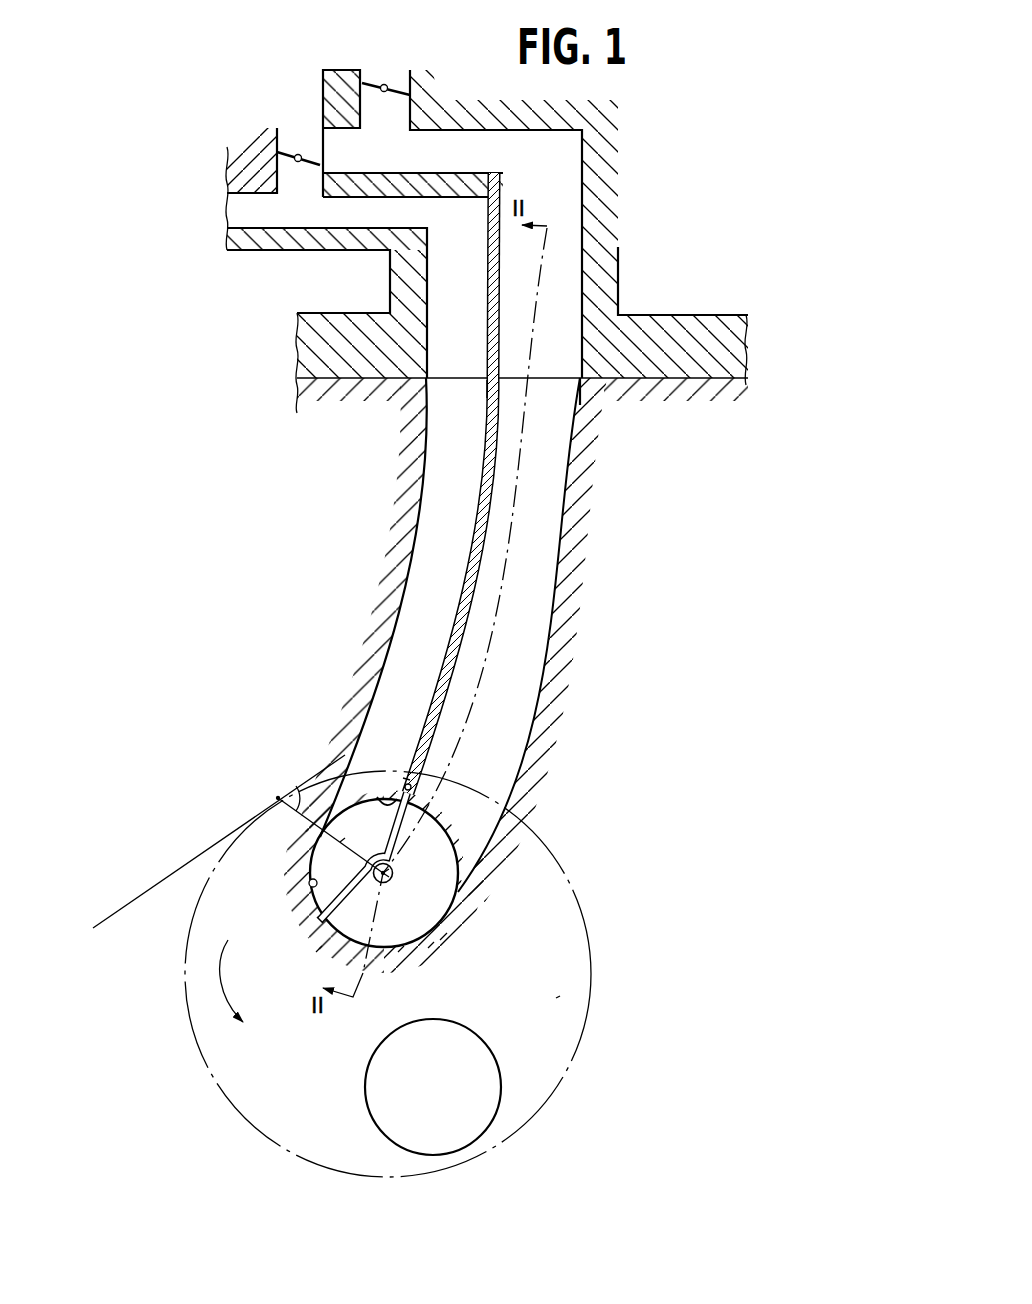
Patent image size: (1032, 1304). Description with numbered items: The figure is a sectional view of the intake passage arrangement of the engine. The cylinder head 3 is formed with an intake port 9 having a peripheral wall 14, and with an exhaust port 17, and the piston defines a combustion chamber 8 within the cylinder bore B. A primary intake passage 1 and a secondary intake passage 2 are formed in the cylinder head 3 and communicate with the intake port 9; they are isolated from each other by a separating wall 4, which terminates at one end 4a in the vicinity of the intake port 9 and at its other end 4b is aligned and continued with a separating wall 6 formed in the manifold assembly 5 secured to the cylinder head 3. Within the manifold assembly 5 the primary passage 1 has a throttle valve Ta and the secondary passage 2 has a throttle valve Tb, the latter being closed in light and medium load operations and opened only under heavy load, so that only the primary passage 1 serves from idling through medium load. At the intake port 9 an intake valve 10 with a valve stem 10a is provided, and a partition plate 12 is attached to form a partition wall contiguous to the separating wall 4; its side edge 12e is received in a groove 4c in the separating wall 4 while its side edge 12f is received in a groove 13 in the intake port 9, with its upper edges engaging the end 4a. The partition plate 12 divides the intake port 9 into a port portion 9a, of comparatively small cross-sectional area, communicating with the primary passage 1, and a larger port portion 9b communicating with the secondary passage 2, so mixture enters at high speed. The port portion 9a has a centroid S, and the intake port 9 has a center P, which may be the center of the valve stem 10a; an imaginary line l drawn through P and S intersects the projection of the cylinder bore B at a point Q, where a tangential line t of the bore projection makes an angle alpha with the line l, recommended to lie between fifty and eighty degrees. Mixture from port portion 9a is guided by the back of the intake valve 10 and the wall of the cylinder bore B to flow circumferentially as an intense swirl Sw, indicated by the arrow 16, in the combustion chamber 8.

The primary intake passage 1 is at (410, 595).
The secondary intake passage 2 is at (535, 572).
The cylinder head 3 is at (580, 405).
The separating wall 4 is at (445, 683).
The end of separating wall 4a is at (405, 777).
The other end of separating wall 4b is at (487, 398).
The groove 4c is at (412, 790).
The manifold assembly 5 is at (660, 325).
The separating wall 6 is at (487, 262).
The combustion chamber 8 is at (558, 997).
The intake port 9 is at (307, 868).
The port portion 9a is at (309, 883).
The port portion 9b is at (400, 950).
The intake valve 10 is at (430, 947).
The valve stem 10a is at (394, 874).
The partition plate 12 is at (340, 897).
The side edge 12e is at (373, 788).
The side edge 12f is at (315, 920).
The groove 13 is at (318, 950).
The peripheral wall 14 is at (443, 937).
The swirl flow direction 16 is at (222, 993).
The exhaust port 17 is at (492, 1125).
The cylinder bore B is at (580, 898).
The center of intake port P is at (378, 887).
The point Q is at (279, 795).
The centroid S is at (344, 840).
The swirl Sw is at (253, 992).
The tangential line t is at (210, 852).
The imaginary line l is at (262, 793).
The angle alpha is at (305, 801).
The throttle valve Ta is at (288, 150).
The throttle valve Tb is at (396, 84).